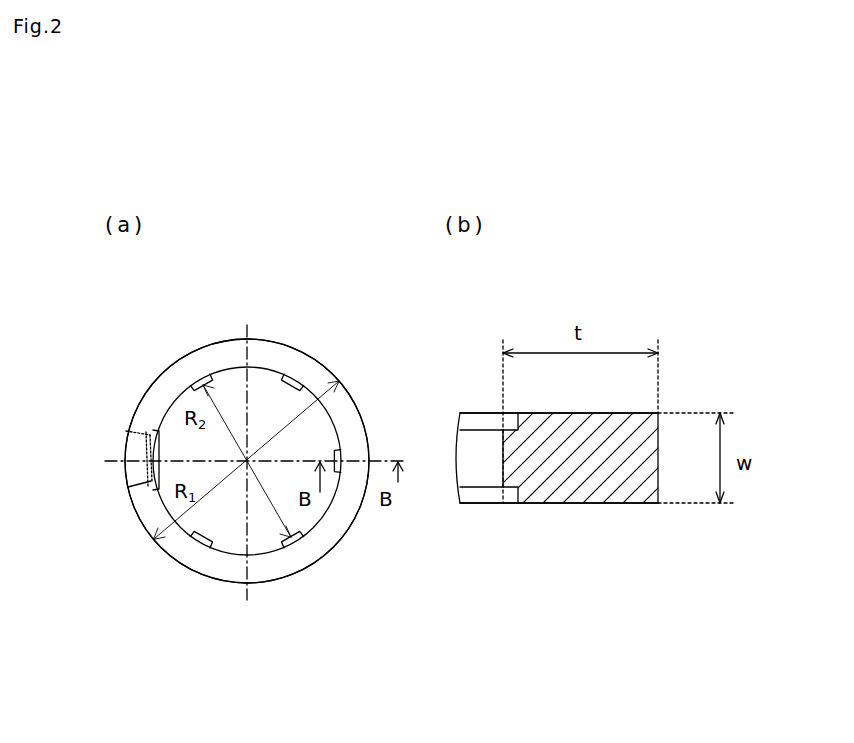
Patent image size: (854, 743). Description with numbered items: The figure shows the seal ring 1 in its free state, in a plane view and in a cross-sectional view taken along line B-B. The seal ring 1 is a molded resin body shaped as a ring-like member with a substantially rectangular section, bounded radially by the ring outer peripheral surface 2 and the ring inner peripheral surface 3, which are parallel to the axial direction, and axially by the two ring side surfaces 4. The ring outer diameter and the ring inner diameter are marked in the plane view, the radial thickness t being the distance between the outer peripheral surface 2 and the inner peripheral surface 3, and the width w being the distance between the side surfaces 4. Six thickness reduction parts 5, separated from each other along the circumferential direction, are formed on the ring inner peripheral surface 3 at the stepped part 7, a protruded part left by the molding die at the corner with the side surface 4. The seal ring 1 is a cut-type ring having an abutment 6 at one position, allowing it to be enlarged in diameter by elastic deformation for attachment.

The seal ring 1 is at (179, 333).
The ring outer peripheral surface 2 is at (172, 560).
The ring inner peripheral surface 3 is at (205, 541).
The ring side surface 4 is at (330, 530).
The thickness reduction part 5 is at (262, 365).
The abutment 6 is at (133, 457).
The stepped part 7 is at (502, 489).